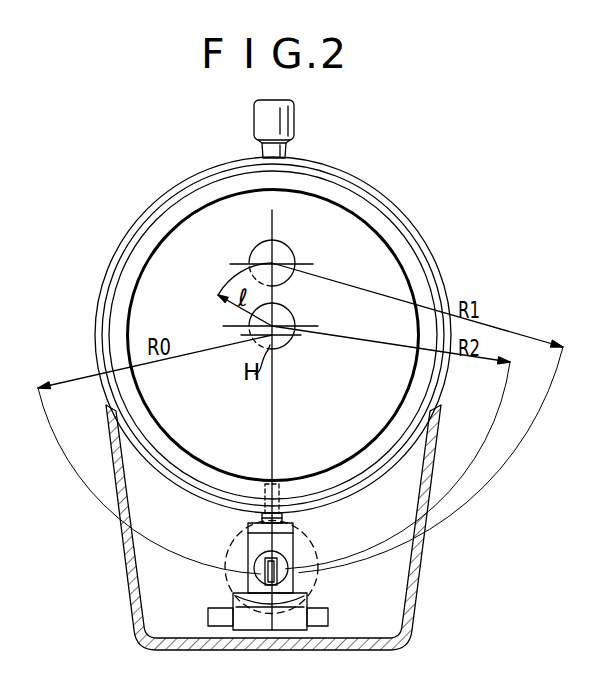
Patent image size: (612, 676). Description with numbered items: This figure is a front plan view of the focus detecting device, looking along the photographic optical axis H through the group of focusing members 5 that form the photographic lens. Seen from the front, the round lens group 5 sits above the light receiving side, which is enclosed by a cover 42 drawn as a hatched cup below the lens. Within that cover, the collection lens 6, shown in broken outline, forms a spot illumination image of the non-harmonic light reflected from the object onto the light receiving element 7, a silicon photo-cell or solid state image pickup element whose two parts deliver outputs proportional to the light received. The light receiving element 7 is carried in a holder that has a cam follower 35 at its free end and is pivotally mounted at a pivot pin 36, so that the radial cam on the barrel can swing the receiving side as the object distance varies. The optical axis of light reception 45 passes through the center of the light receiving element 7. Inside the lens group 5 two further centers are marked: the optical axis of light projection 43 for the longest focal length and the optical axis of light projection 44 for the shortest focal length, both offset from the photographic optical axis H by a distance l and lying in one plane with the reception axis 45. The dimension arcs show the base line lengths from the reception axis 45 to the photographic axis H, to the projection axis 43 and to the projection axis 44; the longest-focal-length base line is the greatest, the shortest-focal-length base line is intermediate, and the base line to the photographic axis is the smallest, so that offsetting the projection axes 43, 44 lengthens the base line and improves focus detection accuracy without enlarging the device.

The group of focusing members 5 is at (388, 255).
The collection lens 6 is at (305, 553).
The light receiving element 7 is at (252, 548).
The cam follower 35 is at (274, 493).
The pivot pin 36 is at (324, 608).
The cover 42 is at (418, 580).
The optical axis of light projection 43 is at (275, 264).
The optical axis of light projection 44 is at (275, 327).
The optical axis of light reception 45 is at (264, 572).